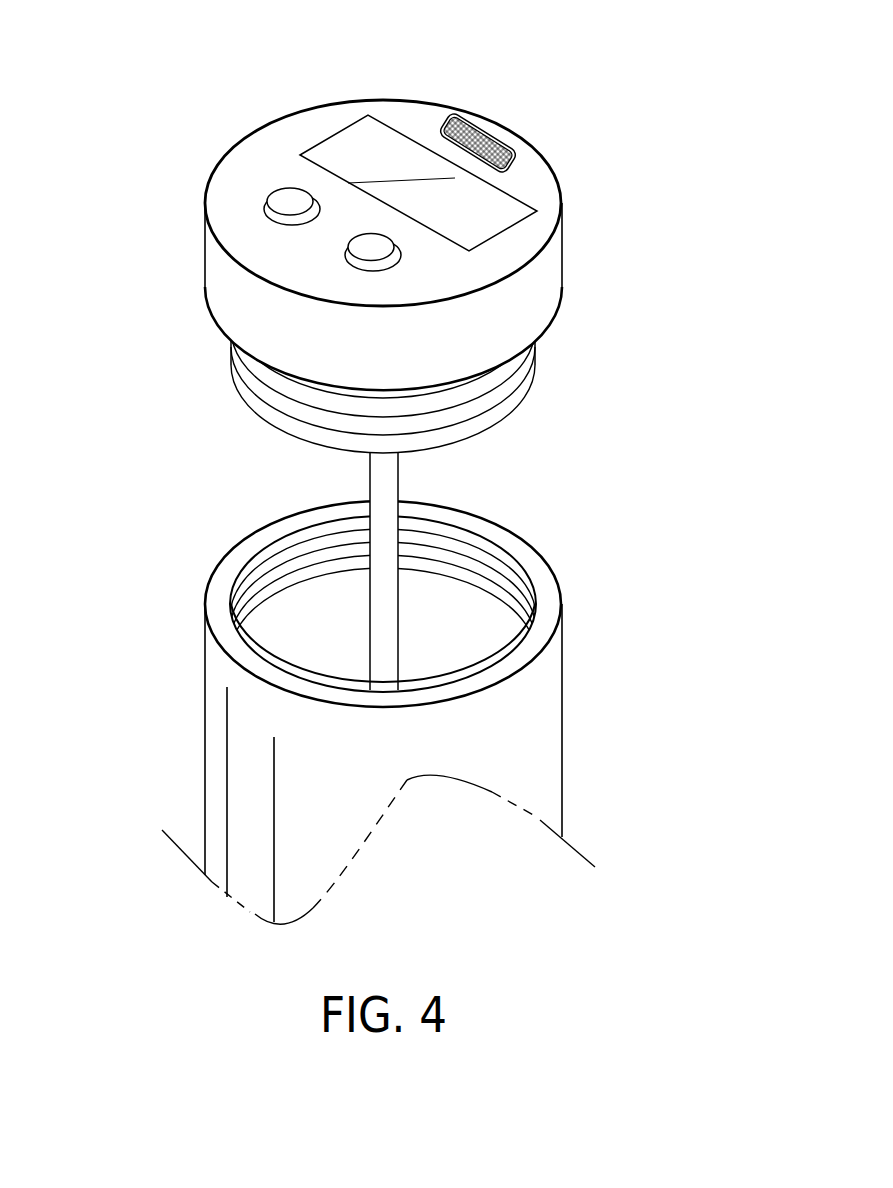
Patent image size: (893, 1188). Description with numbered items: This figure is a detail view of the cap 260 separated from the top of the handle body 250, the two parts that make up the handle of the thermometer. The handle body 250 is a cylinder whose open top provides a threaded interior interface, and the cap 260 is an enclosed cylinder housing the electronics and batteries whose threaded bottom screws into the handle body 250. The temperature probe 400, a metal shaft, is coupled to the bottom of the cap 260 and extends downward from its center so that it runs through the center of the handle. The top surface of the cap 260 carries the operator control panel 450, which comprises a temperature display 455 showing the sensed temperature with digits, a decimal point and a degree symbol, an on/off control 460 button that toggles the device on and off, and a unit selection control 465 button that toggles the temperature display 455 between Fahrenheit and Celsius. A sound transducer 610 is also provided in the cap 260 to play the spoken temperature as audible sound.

The handle body 250 is at (655, 885).
The cap 260 is at (633, 115).
The temperature probe 400 is at (380, 520).
The operator control panel 450 is at (312, 50).
The temperature display 455 is at (360, 127).
The on/off control 460 is at (280, 205).
The unit selection control 465 is at (371, 250).
The sound transducer 610 is at (497, 147).